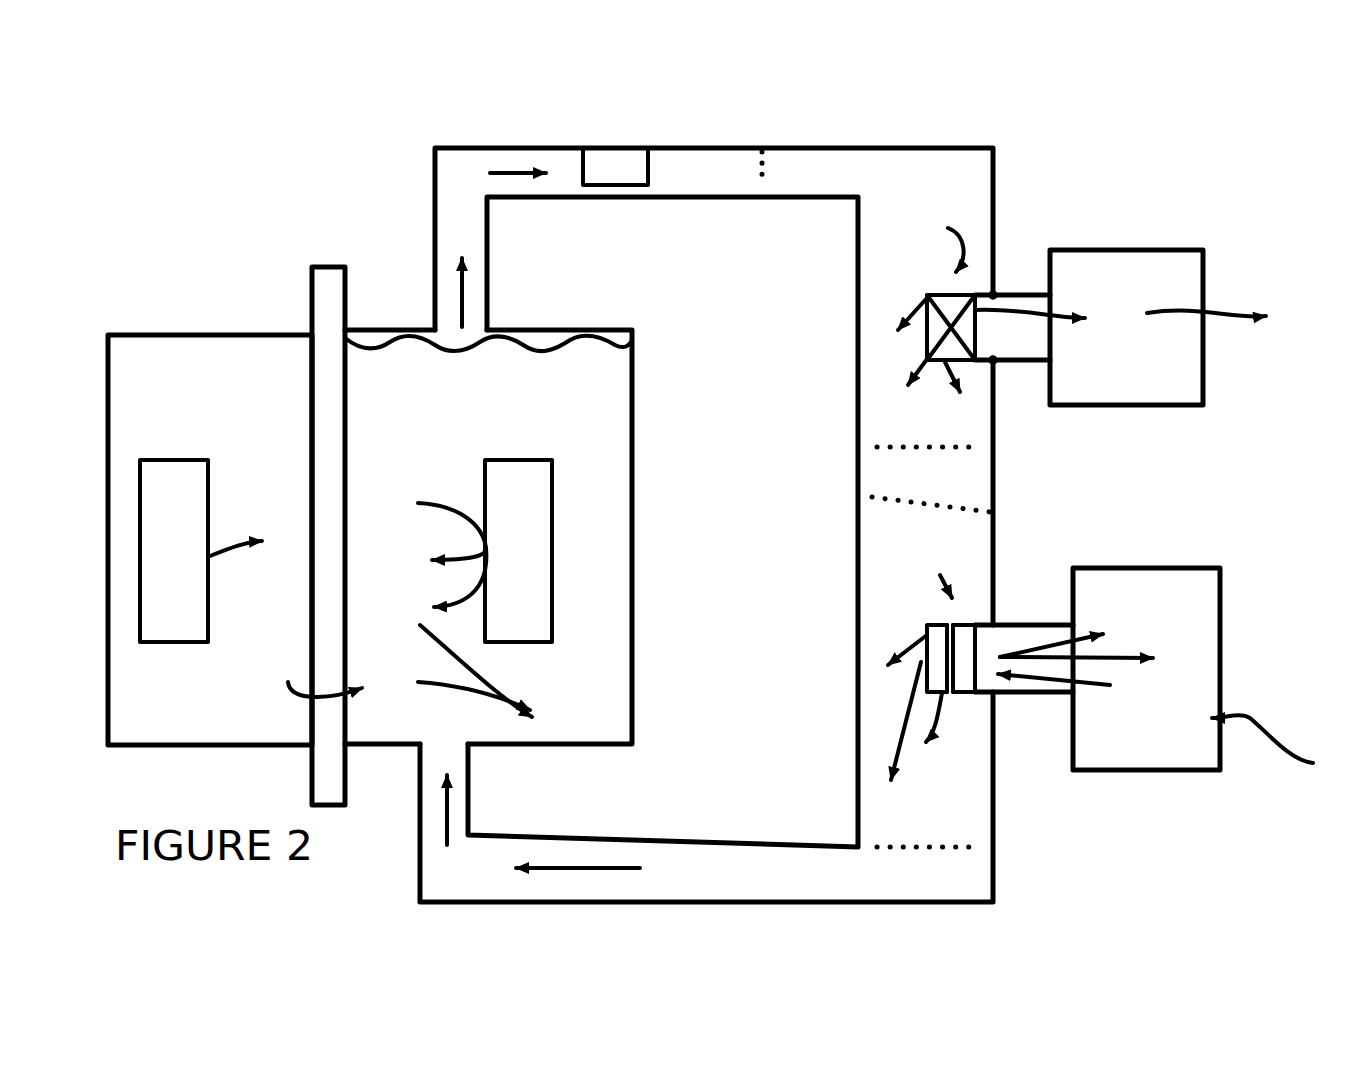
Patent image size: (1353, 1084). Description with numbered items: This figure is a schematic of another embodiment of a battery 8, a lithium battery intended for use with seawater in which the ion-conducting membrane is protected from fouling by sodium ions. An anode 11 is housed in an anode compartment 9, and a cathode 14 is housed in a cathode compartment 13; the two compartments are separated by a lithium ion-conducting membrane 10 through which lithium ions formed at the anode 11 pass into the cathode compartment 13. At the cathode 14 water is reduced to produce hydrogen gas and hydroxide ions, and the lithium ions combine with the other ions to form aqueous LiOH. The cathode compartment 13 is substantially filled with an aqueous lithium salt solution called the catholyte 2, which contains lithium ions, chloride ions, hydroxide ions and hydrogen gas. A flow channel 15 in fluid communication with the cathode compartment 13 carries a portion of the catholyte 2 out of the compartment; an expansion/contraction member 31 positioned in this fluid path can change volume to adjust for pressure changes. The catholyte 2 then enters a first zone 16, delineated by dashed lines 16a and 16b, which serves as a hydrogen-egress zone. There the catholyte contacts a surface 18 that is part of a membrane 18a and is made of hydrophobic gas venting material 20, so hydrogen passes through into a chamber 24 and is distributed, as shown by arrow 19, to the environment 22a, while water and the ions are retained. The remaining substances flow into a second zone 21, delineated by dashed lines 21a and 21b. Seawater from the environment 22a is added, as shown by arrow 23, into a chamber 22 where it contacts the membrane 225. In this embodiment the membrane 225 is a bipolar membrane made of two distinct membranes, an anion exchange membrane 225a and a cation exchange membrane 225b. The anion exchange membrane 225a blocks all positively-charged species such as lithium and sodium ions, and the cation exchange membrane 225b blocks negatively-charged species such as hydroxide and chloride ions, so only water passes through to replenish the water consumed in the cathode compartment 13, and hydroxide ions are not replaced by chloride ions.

The catholyte 2 is at (488, 537).
The battery 8 is at (630, 533).
The anode compartment 9 is at (225, 452).
The lithium ion-conducting membrane 10 is at (312, 265).
The anode 11 is at (168, 642).
The cathode compartment 13 is at (632, 653).
The cathode 14 is at (552, 557).
The flow channel 15 is at (435, 215).
The first zone 16 is at (929, 318).
The dashed line 16a is at (745, 186).
The dashed line 16b is at (938, 462).
The surface 18 is at (843, 312).
The membrane 18a is at (927, 295).
The arrow 19 is at (1222, 320).
The hydrophobic gas venting material 20 is at (975, 333).
The second zone 21 is at (916, 712).
The dashed line 21a is at (970, 527).
The dashed line 21b is at (922, 857).
The chamber 22 is at (1171, 705).
The environment 22a is at (1171, 509).
The arrow 23 is at (1278, 755).
The chamber 24 is at (1158, 310).
The expansion/contraction member 31 is at (603, 185).
The membrane 225 is at (883, 718).
The anion exchange membrane 225a is at (965, 695).
The cation exchange membrane 225b is at (955, 695).